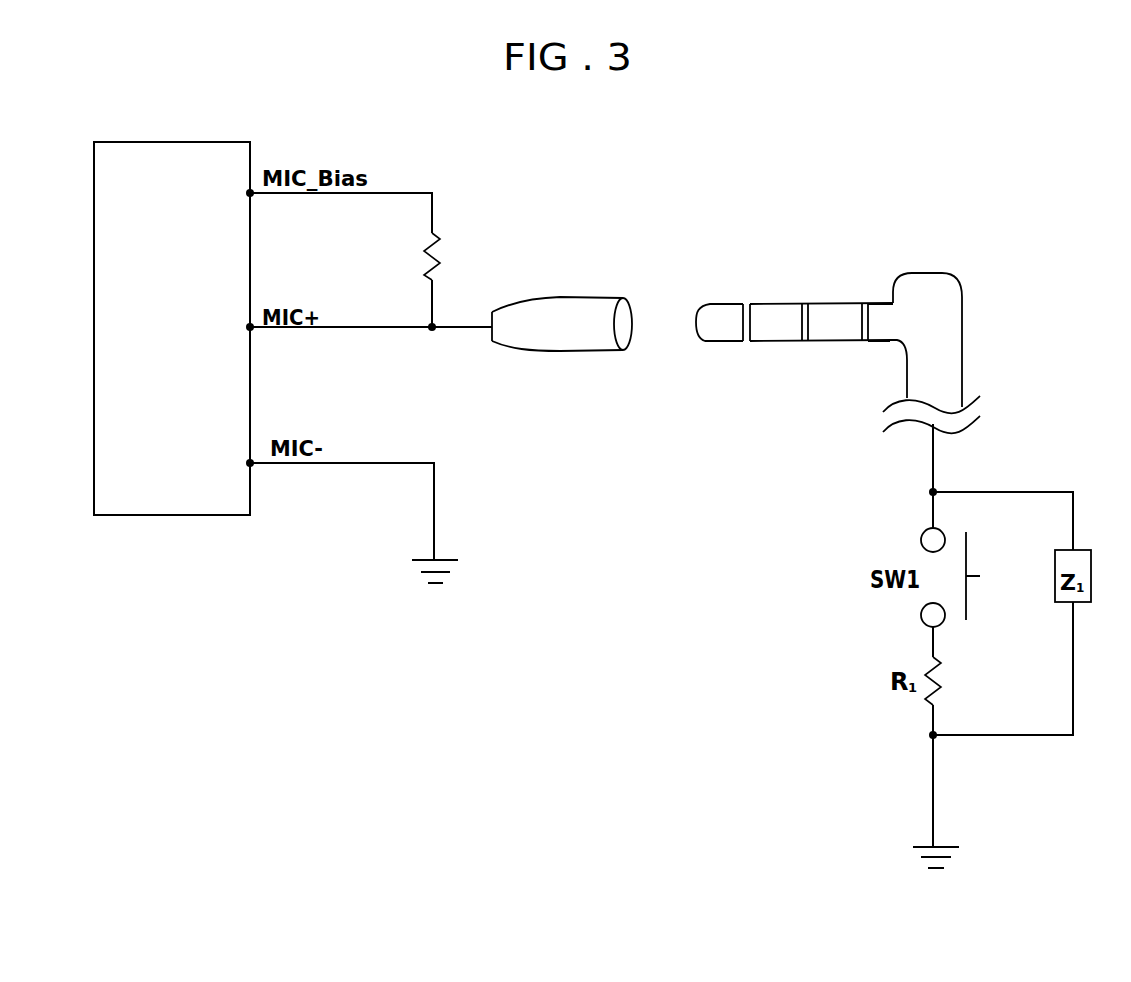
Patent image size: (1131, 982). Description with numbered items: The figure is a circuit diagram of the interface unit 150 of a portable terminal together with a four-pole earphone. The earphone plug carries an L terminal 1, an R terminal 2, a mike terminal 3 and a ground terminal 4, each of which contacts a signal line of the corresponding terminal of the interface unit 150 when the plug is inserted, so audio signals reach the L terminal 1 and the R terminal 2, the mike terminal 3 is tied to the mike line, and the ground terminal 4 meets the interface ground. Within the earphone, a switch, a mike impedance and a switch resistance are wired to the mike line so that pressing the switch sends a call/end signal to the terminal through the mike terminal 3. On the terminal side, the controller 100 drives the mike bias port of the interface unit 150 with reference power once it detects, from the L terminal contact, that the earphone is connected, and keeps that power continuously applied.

The controller 100 is at (165, 494).
The interface unit 150 is at (528, 341).
The L terminal 1 is at (723, 301).
The R terminal 2 is at (775, 343).
The mike terminal 3 is at (836, 302).
The ground terminal 4 is at (877, 343).